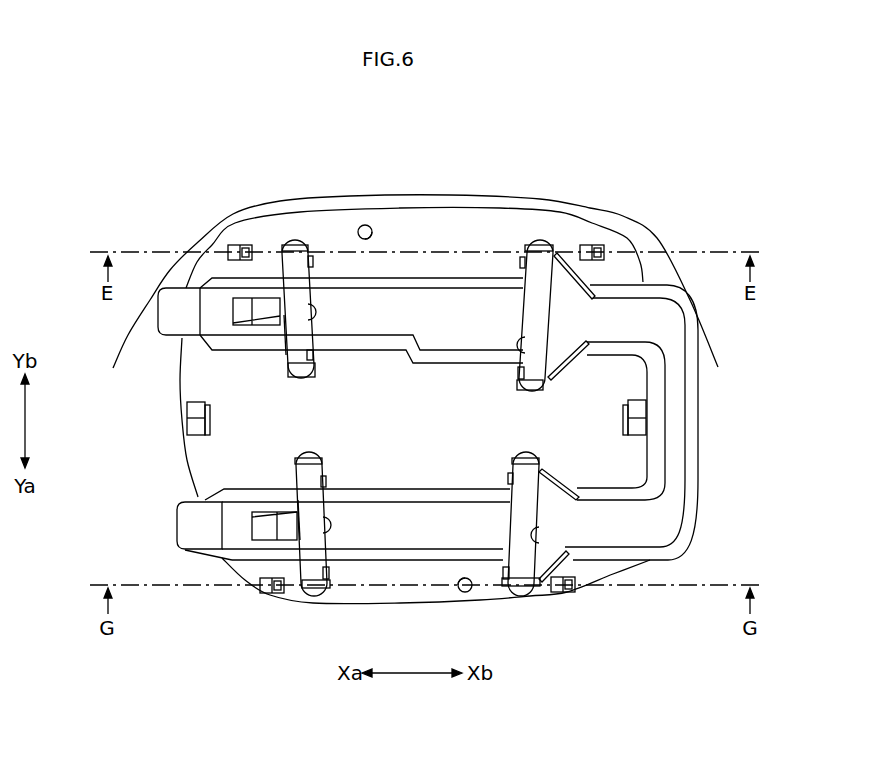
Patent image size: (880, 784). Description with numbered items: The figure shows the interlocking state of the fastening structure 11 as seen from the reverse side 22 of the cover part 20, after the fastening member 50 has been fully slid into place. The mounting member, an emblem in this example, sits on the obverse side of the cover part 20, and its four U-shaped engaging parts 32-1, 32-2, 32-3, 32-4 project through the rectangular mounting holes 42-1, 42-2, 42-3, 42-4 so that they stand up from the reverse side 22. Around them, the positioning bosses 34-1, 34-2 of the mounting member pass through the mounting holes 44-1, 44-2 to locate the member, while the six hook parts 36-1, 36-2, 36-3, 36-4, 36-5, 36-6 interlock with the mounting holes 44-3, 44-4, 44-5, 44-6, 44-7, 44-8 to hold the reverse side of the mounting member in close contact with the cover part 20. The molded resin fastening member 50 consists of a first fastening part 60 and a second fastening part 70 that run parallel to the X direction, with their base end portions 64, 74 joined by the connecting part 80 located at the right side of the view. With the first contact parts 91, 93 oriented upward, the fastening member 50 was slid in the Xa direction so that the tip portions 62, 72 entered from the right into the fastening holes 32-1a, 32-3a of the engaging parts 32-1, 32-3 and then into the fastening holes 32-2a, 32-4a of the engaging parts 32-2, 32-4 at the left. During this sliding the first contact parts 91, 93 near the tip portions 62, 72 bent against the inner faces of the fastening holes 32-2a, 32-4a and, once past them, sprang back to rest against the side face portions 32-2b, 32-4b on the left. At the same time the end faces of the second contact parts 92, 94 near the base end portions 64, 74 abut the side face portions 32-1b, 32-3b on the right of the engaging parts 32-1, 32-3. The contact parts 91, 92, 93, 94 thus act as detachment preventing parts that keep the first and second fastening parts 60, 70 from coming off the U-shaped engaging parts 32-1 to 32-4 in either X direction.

The fastening structure 11 is at (452, 155).
The cover part 20 is at (479, 228).
The reverse side 22 is at (618, 468).
The fastening member 50 is at (666, 431).
The first fastening part 60 is at (332, 292).
The tip portion 62 is at (187, 300).
The base end portion 64 is at (667, 308).
The second fastening part 70 is at (313, 501).
The tip portion 72 is at (190, 523).
The base end portion 74 is at (645, 527).
The connecting part 80 is at (692, 419).
The first contact part 91 is at (270, 308).
The second contact part 92 is at (574, 300).
The first contact part 93 is at (287, 530).
The second contact part 94 is at (556, 500).
The U-shaped engaging part 32-1 is at (515, 283).
The fastening hole 32-1a is at (516, 368).
The side face portion 32-1b is at (557, 362).
The U-shaped engaging part 32-2 is at (317, 283).
The fastening hole 32-2a is at (312, 325).
The side face portion 32-2b is at (283, 323).
The U-shaped engaging part 32-3 is at (506, 526).
The fastening hole 32-3a is at (508, 505).
The side face portion 32-3b is at (543, 577).
The U-shaped engaging part 32-4 is at (323, 503).
The fastening hole 32-4a is at (332, 505).
The side face portion 32-4b is at (290, 504).
The positioning boss 34-1 is at (389, 199).
The positioning boss 34-2 is at (437, 615).
The hook part 36-1 is at (662, 403).
The hook part 36-2 is at (173, 405).
The hook part 36-3 is at (643, 222).
The hook part 36-4 is at (206, 210).
The hook part 36-5 is at (245, 623).
The hook part 36-6 is at (596, 622).
The mounting hole 42-1 is at (521, 267).
The mounting hole 42-2 is at (313, 266).
The mounting hole 42-3 is at (510, 477).
The mounting hole 42-4 is at (325, 478).
The mounting hole 44-1 is at (378, 238).
The mounting hole 44-2 is at (462, 580).
The mounting hole 44-3 is at (624, 405).
The mounting hole 44-4 is at (207, 404).
The mounting hole 44-5 is at (606, 251).
The mounting hole 44-6 is at (244, 250).
The mounting hole 44-7 is at (258, 590).
The mounting hole 44-8 is at (574, 582).